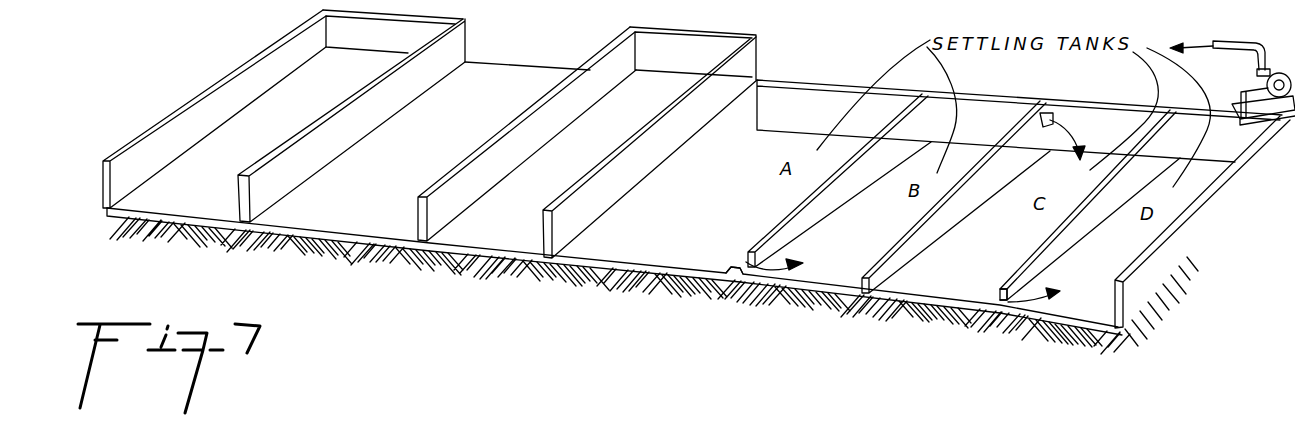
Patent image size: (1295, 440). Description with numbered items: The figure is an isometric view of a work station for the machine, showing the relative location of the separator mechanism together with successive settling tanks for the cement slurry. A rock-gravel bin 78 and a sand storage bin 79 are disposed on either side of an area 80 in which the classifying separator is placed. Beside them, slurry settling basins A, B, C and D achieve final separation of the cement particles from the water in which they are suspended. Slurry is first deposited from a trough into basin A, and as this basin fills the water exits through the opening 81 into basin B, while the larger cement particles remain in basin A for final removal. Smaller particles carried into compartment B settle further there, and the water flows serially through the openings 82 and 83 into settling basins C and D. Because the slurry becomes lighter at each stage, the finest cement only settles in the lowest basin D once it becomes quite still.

The rock-gravel bin 78 is at (207, 187).
The sand storage bin 79 is at (520, 217).
The area 80 is at (362, 217).
The opening 81 is at (742, 267).
The opening 82 is at (1040, 117).
The opening 83 is at (1008, 297).